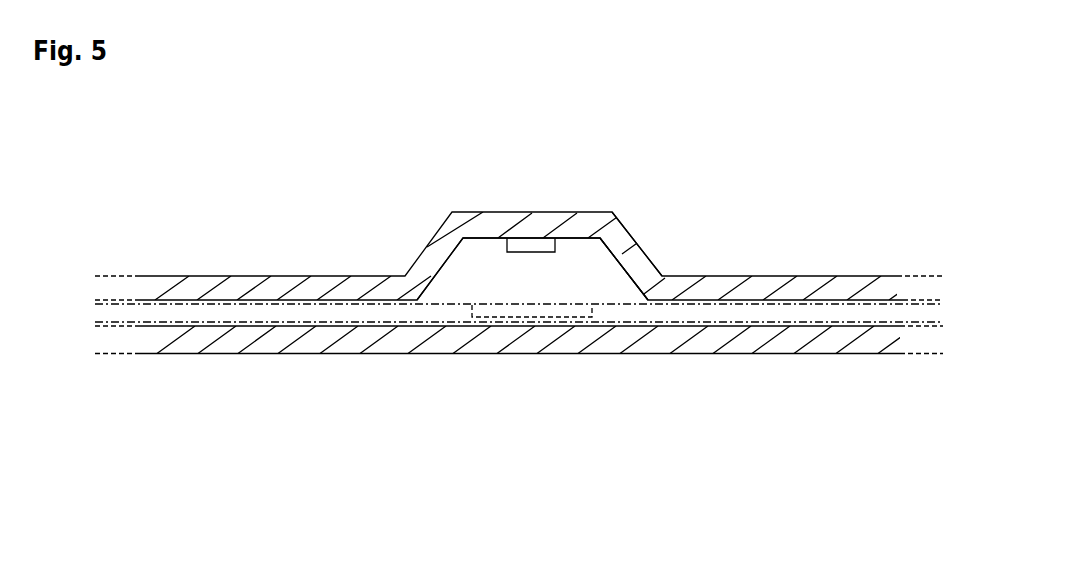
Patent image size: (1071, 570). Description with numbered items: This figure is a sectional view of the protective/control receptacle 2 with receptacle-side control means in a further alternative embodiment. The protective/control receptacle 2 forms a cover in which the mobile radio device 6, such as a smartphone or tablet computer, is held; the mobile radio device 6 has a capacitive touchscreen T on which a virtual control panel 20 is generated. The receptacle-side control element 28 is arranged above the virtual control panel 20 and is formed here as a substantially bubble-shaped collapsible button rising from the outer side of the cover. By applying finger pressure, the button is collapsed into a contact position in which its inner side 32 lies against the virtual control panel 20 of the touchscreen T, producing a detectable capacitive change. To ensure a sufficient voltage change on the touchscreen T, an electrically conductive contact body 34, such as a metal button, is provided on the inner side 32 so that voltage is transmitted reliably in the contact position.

The protective/control receptacle 2 is at (638, 352).
The mobile radio device 6 is at (745, 327).
The virtual control panel 20 is at (528, 312).
The control element 28 is at (413, 243).
The inner side 32 is at (568, 256).
The electrically conductive contact body 34 is at (522, 248).
The touchscreen T is at (249, 298).